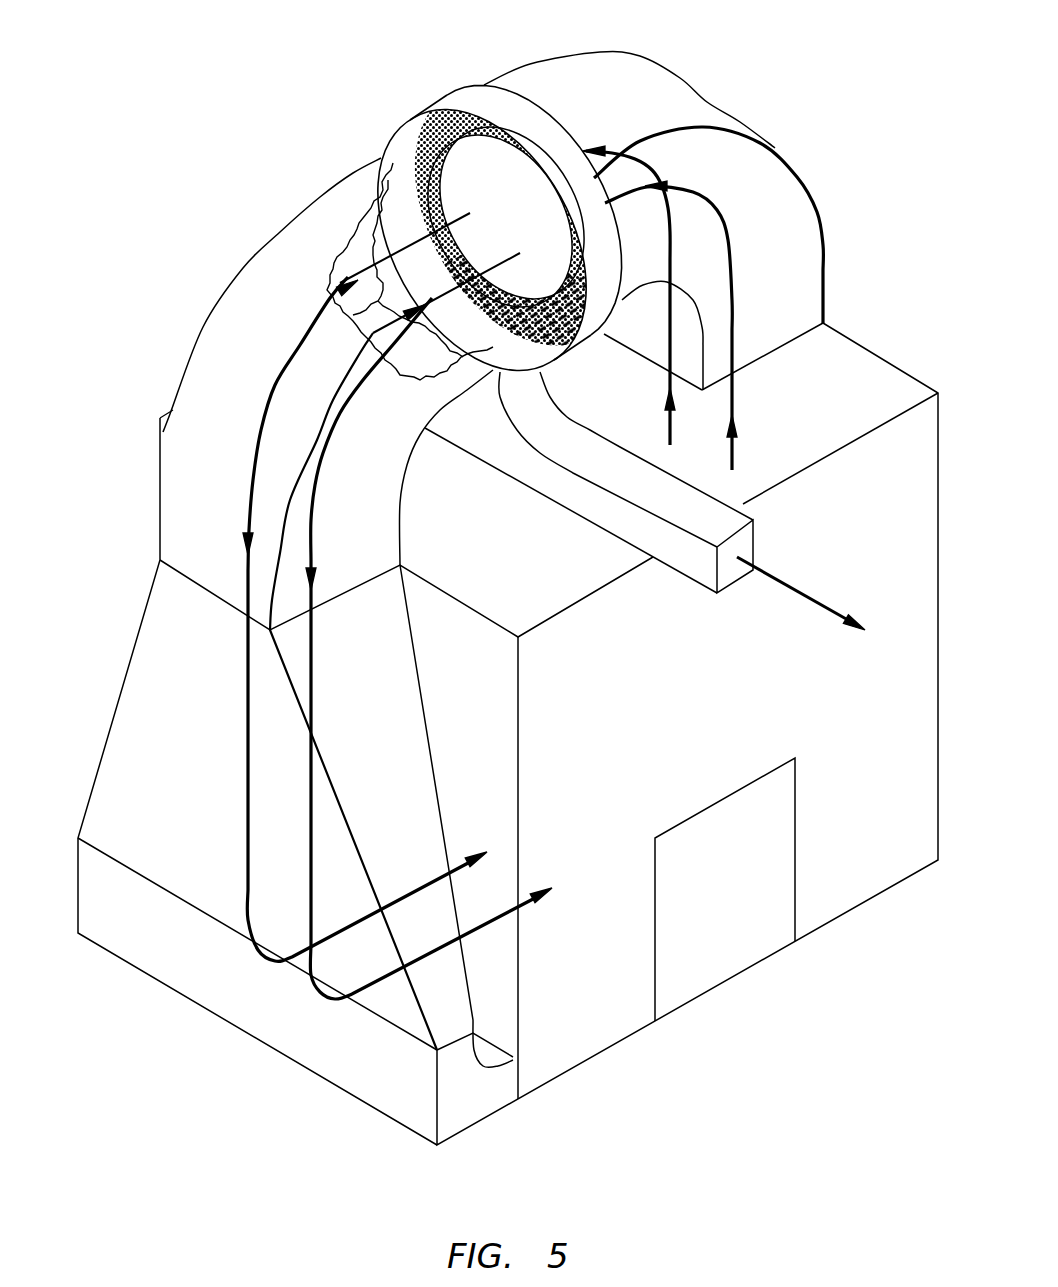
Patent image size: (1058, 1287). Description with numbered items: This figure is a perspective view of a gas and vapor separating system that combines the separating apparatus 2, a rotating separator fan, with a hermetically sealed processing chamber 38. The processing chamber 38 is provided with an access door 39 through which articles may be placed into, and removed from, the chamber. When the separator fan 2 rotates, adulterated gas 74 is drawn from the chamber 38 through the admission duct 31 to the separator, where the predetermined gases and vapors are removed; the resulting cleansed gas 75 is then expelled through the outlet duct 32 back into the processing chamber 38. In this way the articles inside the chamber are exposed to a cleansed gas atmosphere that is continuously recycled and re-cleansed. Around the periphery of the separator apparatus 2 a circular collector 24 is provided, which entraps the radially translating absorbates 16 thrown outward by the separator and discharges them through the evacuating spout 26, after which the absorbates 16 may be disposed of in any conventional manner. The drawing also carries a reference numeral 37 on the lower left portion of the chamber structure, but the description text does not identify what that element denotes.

The separator apparatus 2 is at (463, 167).
The absorbates 16 is at (447, 207).
The circular collector 24 is at (500, 189).
The evacuating spout 26 is at (632, 500).
The admission duct 31 is at (707, 102).
The outlet duct 32 is at (243, 268).
The block left portion 37 is at (155, 575).
The hermetically sealed processing chamber 38 is at (687, 734).
The access door 39 is at (734, 893).
The adulterated gas 74 is at (708, 308).
The cleansed gas 75 is at (254, 445).